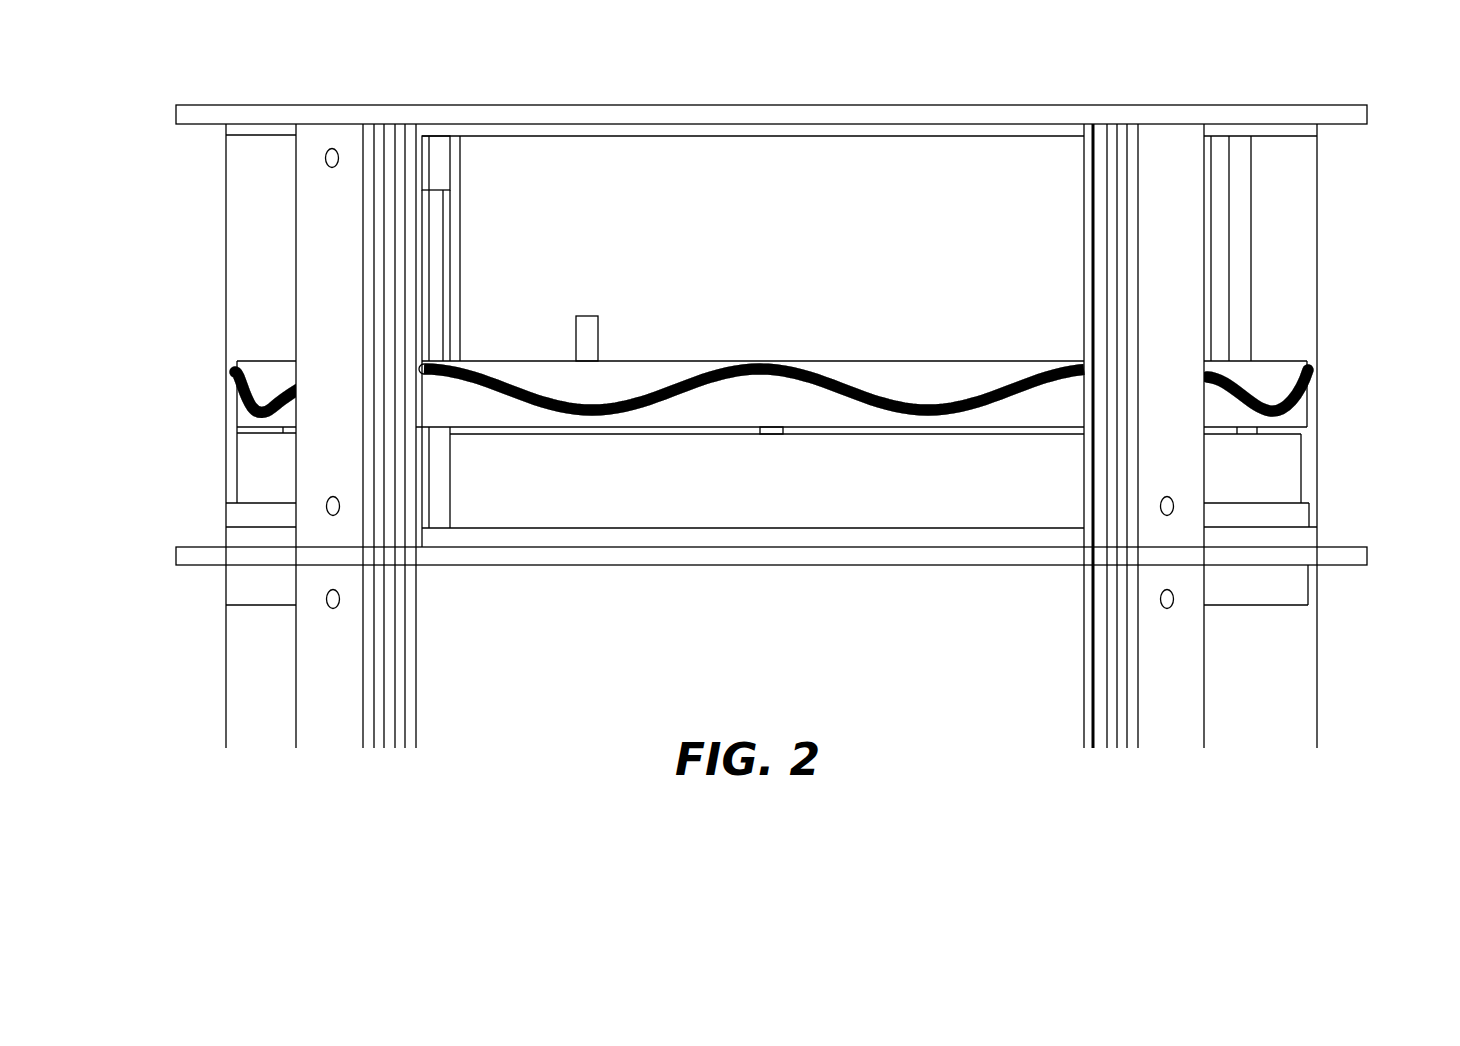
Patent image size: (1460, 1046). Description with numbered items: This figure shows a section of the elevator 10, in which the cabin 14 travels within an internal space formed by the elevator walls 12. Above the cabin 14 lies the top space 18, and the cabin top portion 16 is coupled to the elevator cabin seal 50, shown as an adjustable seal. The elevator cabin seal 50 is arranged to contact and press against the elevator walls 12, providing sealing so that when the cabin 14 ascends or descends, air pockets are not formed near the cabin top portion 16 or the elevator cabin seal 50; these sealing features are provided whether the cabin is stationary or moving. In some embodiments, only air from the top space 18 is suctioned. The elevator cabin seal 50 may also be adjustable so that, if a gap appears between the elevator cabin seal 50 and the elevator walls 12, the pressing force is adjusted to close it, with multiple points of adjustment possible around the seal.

The elevator 10 is at (1210, 65).
The elevator walls 12 is at (1334, 206).
The cabin 14 is at (1186, 643).
The cabin top portion 16 is at (1275, 476).
The top space 18 is at (160, 105).
The elevator cabin seal 50 is at (1336, 379).